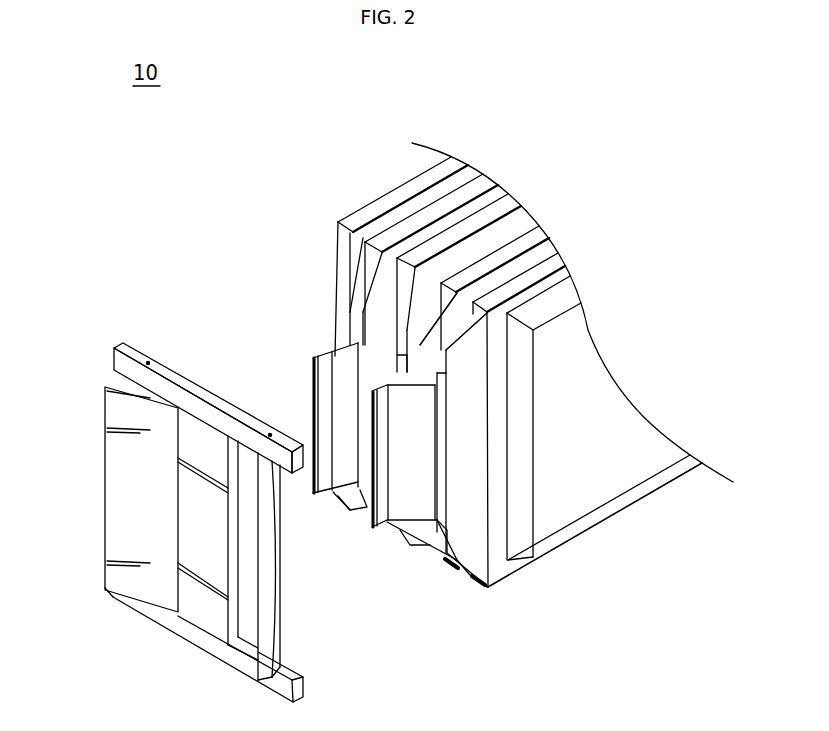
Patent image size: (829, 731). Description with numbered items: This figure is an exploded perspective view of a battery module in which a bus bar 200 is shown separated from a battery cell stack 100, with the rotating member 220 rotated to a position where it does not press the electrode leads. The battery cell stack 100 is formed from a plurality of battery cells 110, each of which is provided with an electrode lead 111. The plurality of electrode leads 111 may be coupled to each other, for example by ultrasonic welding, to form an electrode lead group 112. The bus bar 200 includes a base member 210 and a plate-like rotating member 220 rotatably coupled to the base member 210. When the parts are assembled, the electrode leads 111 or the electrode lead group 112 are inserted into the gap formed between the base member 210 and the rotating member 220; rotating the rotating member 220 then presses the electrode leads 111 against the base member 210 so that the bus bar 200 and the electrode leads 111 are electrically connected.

The battery cell stack 100 is at (529, 339).
The battery cell 110 is at (383, 225).
The electrode lead 111 is at (414, 497).
The electrode lead group 112 is at (313, 496).
The bus bar 200 is at (168, 483).
The base member 210 is at (193, 388).
The rotating member 220 is at (115, 491).